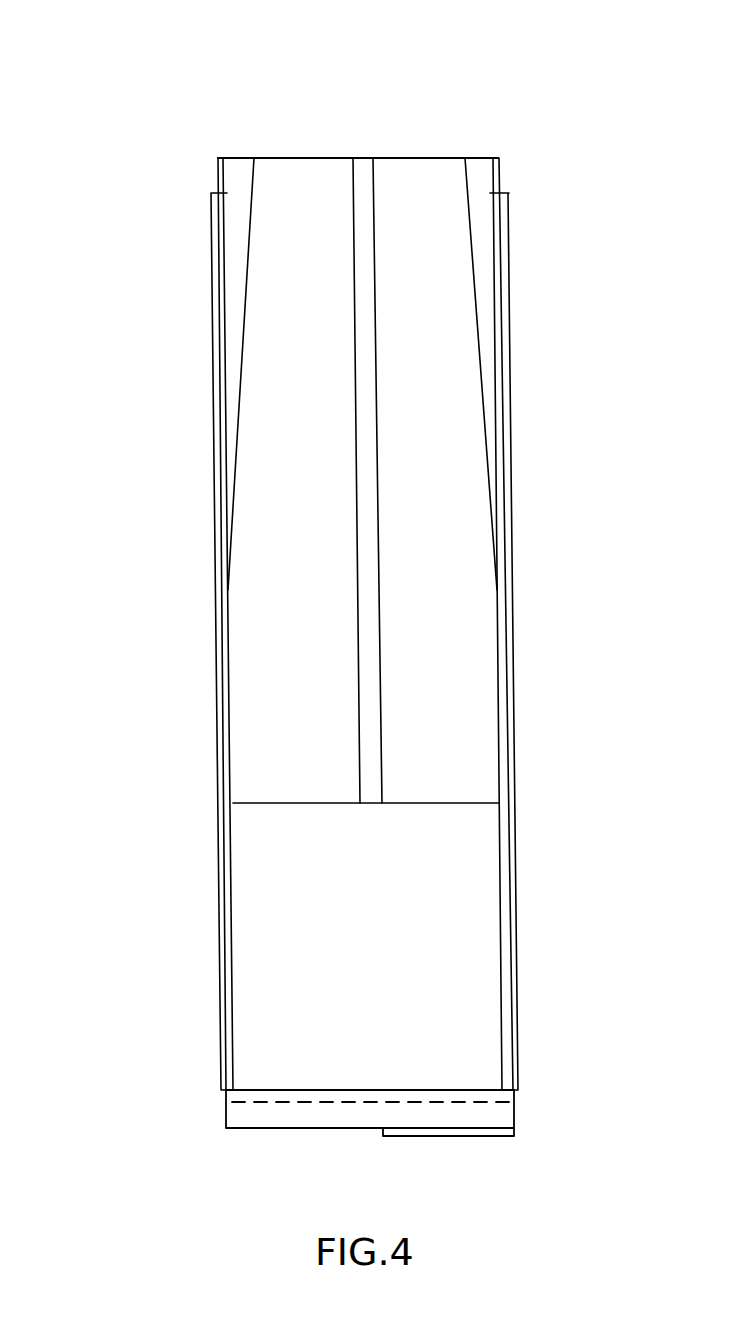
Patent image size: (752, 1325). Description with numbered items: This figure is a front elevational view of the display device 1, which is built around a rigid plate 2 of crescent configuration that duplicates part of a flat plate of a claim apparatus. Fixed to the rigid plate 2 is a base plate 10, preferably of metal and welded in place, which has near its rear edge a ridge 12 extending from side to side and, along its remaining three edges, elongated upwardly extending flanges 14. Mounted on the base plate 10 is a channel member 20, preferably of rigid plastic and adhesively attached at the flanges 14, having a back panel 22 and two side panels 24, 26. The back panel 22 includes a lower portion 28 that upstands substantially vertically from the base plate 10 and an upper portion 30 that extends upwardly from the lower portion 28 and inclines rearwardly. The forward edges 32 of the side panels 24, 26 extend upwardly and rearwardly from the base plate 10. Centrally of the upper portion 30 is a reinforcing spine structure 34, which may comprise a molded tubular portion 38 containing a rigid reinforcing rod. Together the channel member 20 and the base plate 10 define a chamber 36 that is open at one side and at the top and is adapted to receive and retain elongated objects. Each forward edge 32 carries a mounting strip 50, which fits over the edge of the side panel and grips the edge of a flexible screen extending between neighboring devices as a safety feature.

The display device 1 is at (540, 63).
The rigid plate 2 is at (503, 1137).
The base plate 10 is at (276, 1130).
The ridge 12 is at (445, 1088).
The flanges 14 is at (237, 1117).
The channel member 20 is at (470, 657).
The back panel 22 is at (388, 158).
The side panel 24 is at (238, 195).
The side panel 26 is at (478, 238).
The lower portion 28 is at (450, 833).
The upper portion 30 is at (448, 428).
The forward edges 32 is at (218, 160).
The reinforcing spine structure 34 is at (376, 231).
The chamber 36 is at (469, 742).
The molded tubular portion 38 is at (378, 298).
The mounting strip 50 is at (515, 520).